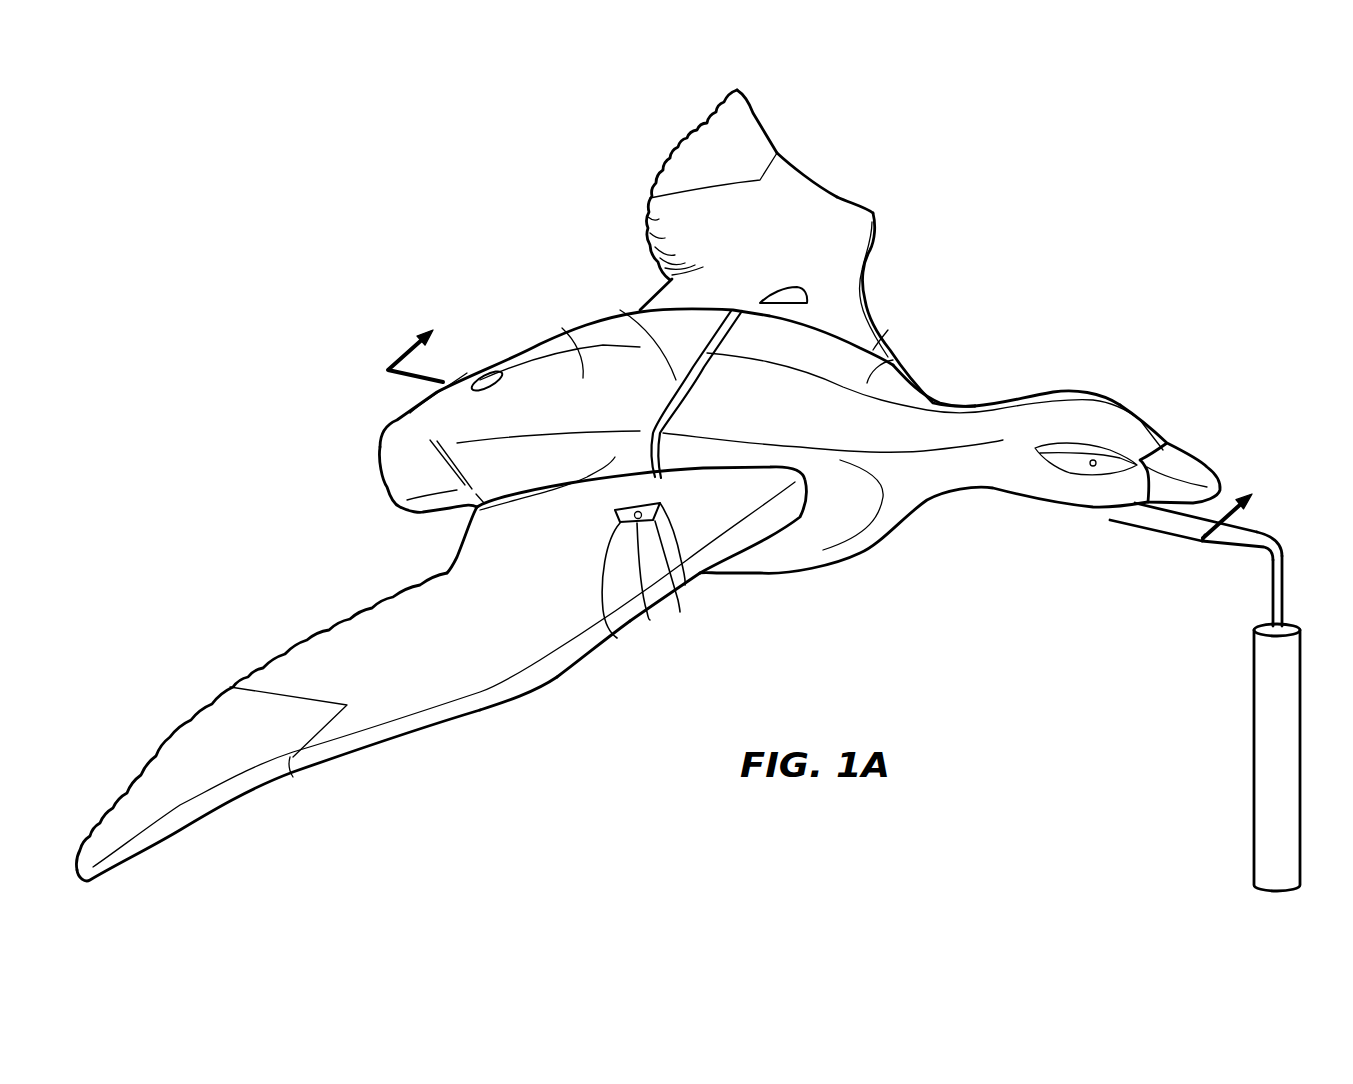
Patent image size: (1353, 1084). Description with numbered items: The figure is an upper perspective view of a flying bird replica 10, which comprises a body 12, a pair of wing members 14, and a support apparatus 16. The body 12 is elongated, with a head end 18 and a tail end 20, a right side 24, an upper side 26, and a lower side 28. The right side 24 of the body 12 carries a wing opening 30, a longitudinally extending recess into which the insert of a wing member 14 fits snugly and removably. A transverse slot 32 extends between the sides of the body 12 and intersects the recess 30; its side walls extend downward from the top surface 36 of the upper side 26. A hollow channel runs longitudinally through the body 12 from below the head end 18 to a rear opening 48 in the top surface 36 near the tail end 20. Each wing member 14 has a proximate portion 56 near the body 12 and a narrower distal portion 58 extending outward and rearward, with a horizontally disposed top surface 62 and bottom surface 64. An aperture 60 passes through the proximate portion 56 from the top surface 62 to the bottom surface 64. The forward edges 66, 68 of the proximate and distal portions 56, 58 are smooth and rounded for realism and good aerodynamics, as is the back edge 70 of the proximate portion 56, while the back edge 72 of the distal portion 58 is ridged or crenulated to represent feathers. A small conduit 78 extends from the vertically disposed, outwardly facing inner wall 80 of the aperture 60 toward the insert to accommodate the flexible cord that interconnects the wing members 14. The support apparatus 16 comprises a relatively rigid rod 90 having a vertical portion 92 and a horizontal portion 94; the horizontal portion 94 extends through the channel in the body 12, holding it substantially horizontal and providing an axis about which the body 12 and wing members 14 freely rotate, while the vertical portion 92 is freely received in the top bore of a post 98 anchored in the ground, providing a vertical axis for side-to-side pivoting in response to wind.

The flying bird replica 10 is at (1050, 262).
The body 12 is at (720, 408).
The wing members 14 is at (750, 249).
The support apparatus 16 is at (1163, 590).
The head end 18 is at (1175, 415).
The tail end 20 is at (378, 496).
The right side 24 is at (472, 523).
The upper side 26 is at (873, 350).
The lower side 28 is at (788, 590).
The wing opening 30 is at (867, 383).
The transverse slot 32 is at (622, 311).
The top surface 36 is at (566, 333).
The rear opening 48 is at (496, 371).
The proximate portion 56 is at (878, 310).
The distal portion 58 is at (797, 167).
The aperture 60 is at (797, 290).
The top surface 62 is at (833, 220).
The bottom surface 64 is at (500, 713).
The forward edge of proximate portion 66 is at (880, 243).
The forward edge of distal portion 68 is at (757, 121).
The back edge of proximate portion 70 is at (661, 283).
The back edge of distal portion 72 is at (683, 150).
The conduit 78 is at (680, 593).
The inner wall 80 is at (650, 616).
The rod 90 is at (1282, 538).
The vertical portion 92 is at (1276, 603).
The horizontal portion 94 is at (1250, 520).
The post 98 is at (1254, 758).